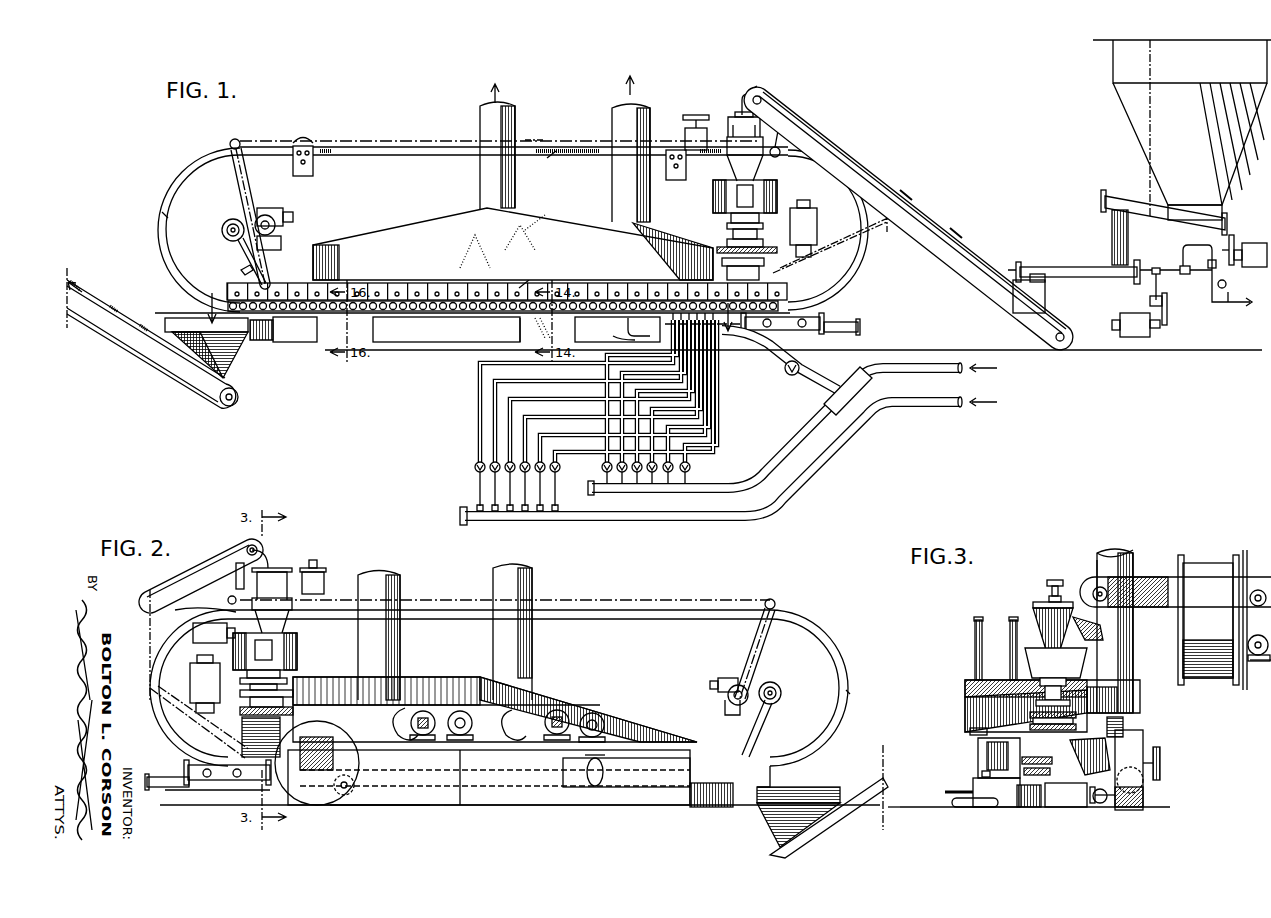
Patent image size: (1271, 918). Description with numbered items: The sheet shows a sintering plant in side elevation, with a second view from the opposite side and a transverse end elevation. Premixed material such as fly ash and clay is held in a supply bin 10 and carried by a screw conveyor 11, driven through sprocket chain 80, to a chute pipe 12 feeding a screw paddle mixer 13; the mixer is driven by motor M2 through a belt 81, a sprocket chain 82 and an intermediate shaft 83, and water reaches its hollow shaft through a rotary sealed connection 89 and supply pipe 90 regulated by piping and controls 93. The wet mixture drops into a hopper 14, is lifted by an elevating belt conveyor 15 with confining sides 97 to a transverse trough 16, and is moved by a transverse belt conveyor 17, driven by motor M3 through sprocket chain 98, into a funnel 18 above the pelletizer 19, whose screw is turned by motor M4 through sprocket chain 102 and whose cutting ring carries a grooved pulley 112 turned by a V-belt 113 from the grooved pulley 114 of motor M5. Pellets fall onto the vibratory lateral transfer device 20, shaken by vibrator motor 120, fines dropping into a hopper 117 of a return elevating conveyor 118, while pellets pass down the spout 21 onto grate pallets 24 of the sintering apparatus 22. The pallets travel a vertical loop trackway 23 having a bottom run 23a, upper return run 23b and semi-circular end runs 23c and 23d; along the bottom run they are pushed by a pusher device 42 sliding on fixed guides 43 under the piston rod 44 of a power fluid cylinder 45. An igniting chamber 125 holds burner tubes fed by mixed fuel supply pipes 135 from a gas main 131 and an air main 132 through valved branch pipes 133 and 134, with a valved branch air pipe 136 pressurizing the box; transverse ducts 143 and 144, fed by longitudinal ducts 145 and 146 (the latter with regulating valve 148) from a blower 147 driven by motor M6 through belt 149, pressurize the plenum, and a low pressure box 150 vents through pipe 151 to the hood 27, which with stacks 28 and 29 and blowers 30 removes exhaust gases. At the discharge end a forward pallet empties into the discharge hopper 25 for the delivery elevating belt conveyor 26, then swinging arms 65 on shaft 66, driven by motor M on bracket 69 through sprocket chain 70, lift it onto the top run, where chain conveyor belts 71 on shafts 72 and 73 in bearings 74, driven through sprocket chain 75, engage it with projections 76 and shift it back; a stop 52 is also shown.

In FIG. 1, the supply bin 10 is at (1113, 75).
In FIG. 1, the screw conveyor 11 is at (1118, 198).
In FIG. 1, the chute pipe 12 is at (1128, 240).
In FIG. 1, the screw paddle mixer 13 is at (1036, 266).
In FIG. 1, the hopper 14 is at (1045, 292).
In FIG. 1, the elevating belt conveyor 15 is at (942, 240).
In FIG. 2, the elevating belt conveyor 15 is at (150, 632).
In FIG. 3, the elevating belt conveyor 15 is at (1212, 560).
In FIG. 1, the transverse trough 16 is at (742, 110).
In FIG. 2, the transverse trough 16 is at (236, 572).
In FIG. 3, the transverse trough 16 is at (1150, 575).
In FIG. 1, the transverse belt conveyor 17 is at (750, 100).
In FIG. 2, the transverse belt conveyor 17 is at (272, 565).
In FIG. 3, the transverse belt conveyor 17 is at (1103, 590).
In FIG. 1, the funnel 18 is at (469, 304).
In FIG. 3, the funnel 18 is at (1095, 640).
In FIG. 1, the pelletizer 19 is at (778, 190).
In FIG. 2, the pelletizer 19 is at (298, 654).
In FIG. 3, the pelletizer 19 is at (1040, 604).
In FIG. 1, the lateral transfer device 20 is at (764, 270).
In FIG. 2, the lateral transfer device 20 is at (242, 737).
In FIG. 3, the lateral transfer device 20 is at (970, 733).
In FIG. 1, the spout 21 is at (716, 253).
In FIG. 3, the spout 21 is at (978, 755).
In FIG. 1, the sintering apparatus 22 is at (452, 342).
In FIG. 2, the sintering apparatus 22 is at (572, 806).
In FIG. 3, the sintering apparatus 22 is at (1006, 808).
In FIG. 1, the vertical loop trackway 23 is at (210, 158).
In FIG. 2, the vertical loop trackway 23 is at (810, 618).
In FIG. 3, the vertical loop trackway 23 is at (975, 620).
In FIG. 1, the bottom run 23a is at (519, 288).
In FIG. 1, the upper return run 23b is at (565, 165).
In FIG. 1, the discharge end run 23c is at (163, 215).
In FIG. 2, the discharge end run 23c is at (849, 665).
In FIG. 1, the return end run 23d is at (850, 240).
In FIG. 1, the grate pallets 24 is at (315, 176).
In FIG. 3, the grate pallets 24 is at (982, 774).
In FIG. 1, the discharge hopper 25 is at (240, 360).
In FIG. 1, the delivery elevating belt conveyor 26 is at (166, 374).
In FIG. 2, the delivery elevating belt conveyor 26 is at (822, 836).
In FIG. 1, the hood 27 is at (414, 226).
In FIG. 2, the hood 27 is at (437, 676).
In FIG. 3, the hood 27 is at (965, 690).
In FIG. 1, the stack 28 is at (517, 110).
In FIG. 2, the stack 28 is at (493, 576).
In FIG. 3, the stack 28 is at (1135, 690).
In FIG. 1, the stack 29 is at (612, 121).
In FIG. 2, the stack 29 is at (400, 573).
In FIG. 2, the motor operated blowers 30 is at (435, 736).
In FIG. 1, the pusher device 42 is at (815, 320).
In FIG. 2, the pusher device 42 is at (218, 782).
In FIG. 1, the fixed guides 43 is at (768, 328).
In FIG. 2, the fixed guides 43 is at (256, 782).
In FIG. 1, the piston rod 44 is at (803, 335).
In FIG. 2, the piston rod 44 is at (203, 795).
In FIG. 1, the power fluid cylinder 45 is at (845, 325).
In FIG. 2, the power fluid cylinder 45 is at (162, 788).
In FIG. 1, the stop 52 is at (241, 270).
In FIG. 1, the swinging arms 65 is at (236, 246).
In FIG. 2, the swinging arms 65 is at (760, 718).
In FIG. 1, the transverse shaft 66 is at (222, 230).
In FIG. 2, the transverse shaft 66 is at (784, 693).
In FIG. 1, the bracket 69 is at (279, 238).
In FIG. 1, the sprocket chain 70 is at (260, 215).
In FIG. 2, the sprocket chain 70 is at (752, 690).
In FIG. 1, the chain conveyor belt 71 is at (368, 141).
In FIG. 2, the chain conveyor belt 71 is at (625, 602).
In FIG. 1, the transverse shaft 72 is at (238, 140).
In FIG. 2, the transverse shaft 72 is at (770, 599).
In FIG. 1, the transverse shaft 73 is at (781, 150).
In FIG. 2, the transverse shaft 73 is at (228, 598).
In FIG. 1, the bearings 74 is at (230, 147).
In FIG. 2, the bearings 74 is at (773, 608).
In FIG. 1, the sprocket chain 75 is at (262, 197).
In FIG. 2, the sprocket chain 75 is at (740, 656).
In FIG. 1, the projections 76 is at (548, 141).
In FIG. 1, the sprocket chain 80 is at (1233, 235).
In FIG. 1, the belt 81 is at (1168, 312).
In FIG. 1, the sprocket chain 82 is at (1158, 280).
In FIG. 1, the intermediate shaft 83 is at (1168, 298).
In FIG. 1, the rotary sealed connection 89 is at (1192, 266).
In FIG. 1, the water supply pipe 90 is at (1183, 247).
In FIG. 1, the water piping and controls 93 is at (1218, 304).
In FIG. 1, the confining sides 97 is at (950, 222).
In FIG. 2, the confining sides 97 is at (242, 540).
In FIG. 3, the confining sides 97 is at (1247, 560).
In FIG. 2, the sprocket chain 98 is at (200, 608).
In FIG. 1, the sprocket chain 102 is at (730, 115).
In FIG. 2, the sprocket chain 102 is at (290, 570).
In FIG. 2, the grooved pulley 112 is at (242, 712).
In FIG. 2, the V-belt 113 is at (240, 704).
In FIG. 2, the grooved pulley 114 is at (204, 725).
In FIG. 3, the hopper 117 is at (1052, 770).
In FIG. 3, the return elevating conveyor 118 is at (1027, 808).
In FIG. 3, the vibrator motor 120 is at (1130, 760).
In FIG. 1, the igniting chamber 125 is at (714, 352).
In FIG. 3, the igniting chamber 125 is at (978, 808).
In FIG. 1, the gas main 131 is at (690, 521).
In FIG. 1, the air main 132 is at (718, 486).
In FIG. 1, the valved branch pipes 133 is at (512, 488).
In FIG. 1, the valved branch pipes 134 is at (604, 477).
In FIG. 1, the mixed fuel supply pipes 135 is at (712, 368).
In FIG. 3, the mixed fuel supply pipes 135 is at (951, 784).
In FIG. 1, the valved branch air pipe 136 is at (900, 362).
In FIG. 3, the valved branch air pipe 136 is at (953, 806).
In FIG. 1, the transverse duct 143 is at (522, 336).
In FIG. 2, the transverse duct 143 is at (420, 806).
In FIG. 1, the transverse duct 144 is at (378, 331).
In FIG. 2, the transverse duct 144 is at (648, 808).
In FIG. 2, the longitudinal duct 145 is at (472, 806).
In FIG. 2, the longitudinal branch duct 146 is at (640, 765).
In FIG. 2, the blower 147 is at (305, 803).
In FIG. 3, the blower 147 is at (1146, 795).
In FIG. 2, the regulating valve 148 is at (590, 770).
In FIG. 2, the belt 149 is at (333, 748).
In FIG. 3, the belt 149 is at (1102, 804).
In FIG. 1, the low pressure box 150 is at (624, 336).
In FIG. 1, the pipe 151 is at (628, 327).
In FIG. 1, the motor M is at (288, 208).
In FIG. 2, the motor M is at (720, 690).
In FIG. 1, the motor M2 is at (1133, 312).
In FIG. 1, the drive motor M3 is at (1252, 242).
In FIG. 2, the drive motor M3 is at (205, 643).
In FIG. 3, the drive motor M3 is at (1262, 662).
In FIG. 1, the motor M4 is at (690, 126).
In FIG. 2, the motor M4 is at (320, 570).
In FIG. 1, the motor M5 is at (810, 222).
In FIG. 2, the motor M5 is at (196, 690).
In FIG. 2, the motor M6 is at (348, 798).
In FIG. 3, the motor M6 is at (1070, 808).